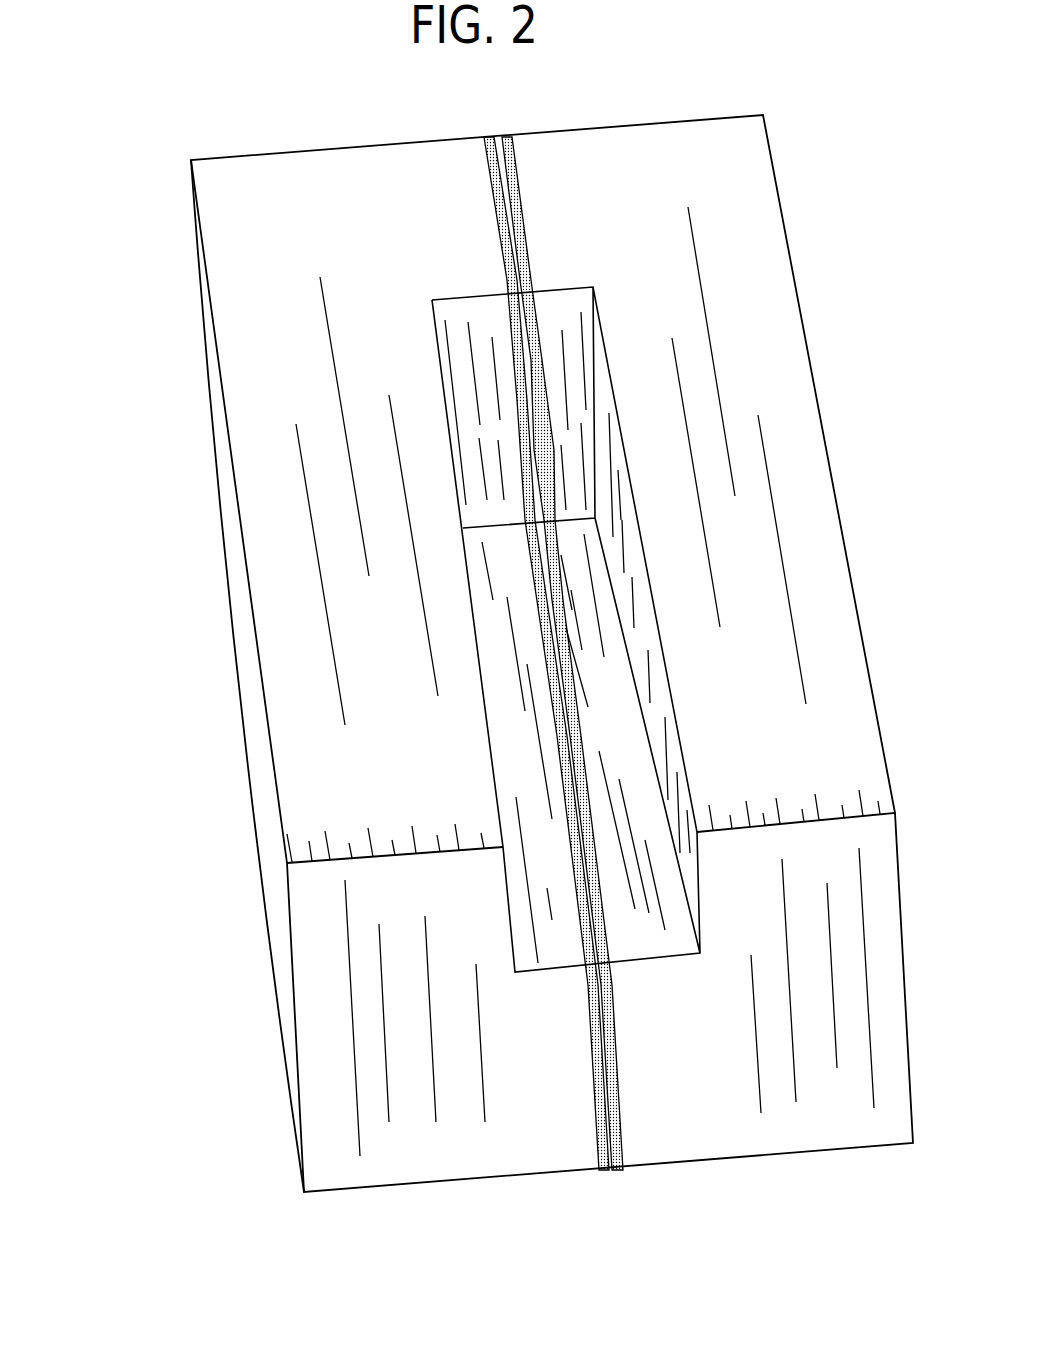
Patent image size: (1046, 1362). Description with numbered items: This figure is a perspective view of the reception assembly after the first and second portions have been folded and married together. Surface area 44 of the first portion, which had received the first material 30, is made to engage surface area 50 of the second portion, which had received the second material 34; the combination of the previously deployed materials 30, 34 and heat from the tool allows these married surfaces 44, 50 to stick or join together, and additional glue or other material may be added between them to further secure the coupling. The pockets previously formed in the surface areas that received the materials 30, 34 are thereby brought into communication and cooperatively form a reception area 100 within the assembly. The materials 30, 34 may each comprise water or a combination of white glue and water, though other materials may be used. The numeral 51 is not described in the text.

The block body 51 is at (150, 633).
The first material 30 is at (496, 782).
The second material 34 is at (652, 716).
The reception area 100 is at (633, 722).
The surface area 50 is at (514, 192).
The surface area 44 is at (508, 262).